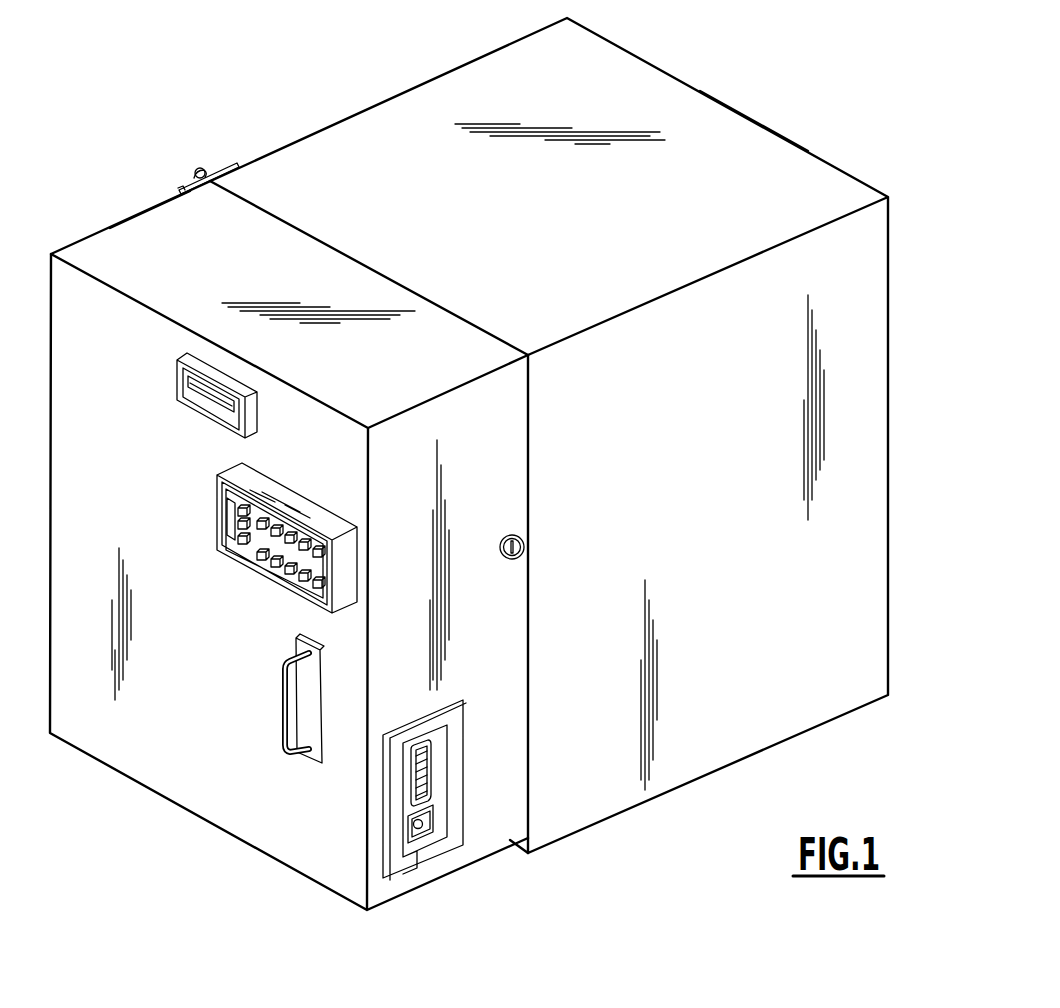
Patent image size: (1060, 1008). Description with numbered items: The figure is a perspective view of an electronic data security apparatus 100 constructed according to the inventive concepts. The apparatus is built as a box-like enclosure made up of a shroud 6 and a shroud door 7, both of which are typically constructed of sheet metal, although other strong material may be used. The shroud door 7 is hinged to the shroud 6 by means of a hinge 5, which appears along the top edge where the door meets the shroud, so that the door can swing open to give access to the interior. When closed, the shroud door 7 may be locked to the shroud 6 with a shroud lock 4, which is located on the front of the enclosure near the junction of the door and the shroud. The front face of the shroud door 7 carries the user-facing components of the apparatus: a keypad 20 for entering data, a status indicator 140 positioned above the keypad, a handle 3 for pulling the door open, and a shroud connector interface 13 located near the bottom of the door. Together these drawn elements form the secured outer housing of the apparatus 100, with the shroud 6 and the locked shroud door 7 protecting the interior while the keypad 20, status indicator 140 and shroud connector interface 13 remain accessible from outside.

The electronic data security apparatus 100 is at (921, 133).
The shroud 6 is at (727, 103).
The shroud door 7 is at (145, 228).
The hinge 5 is at (198, 168).
The status indicator 140 is at (177, 373).
The keypad 20 is at (217, 512).
The handle 3 is at (282, 697).
The shroud lock 4 is at (526, 547).
The shroud connector interface 13 is at (430, 838).